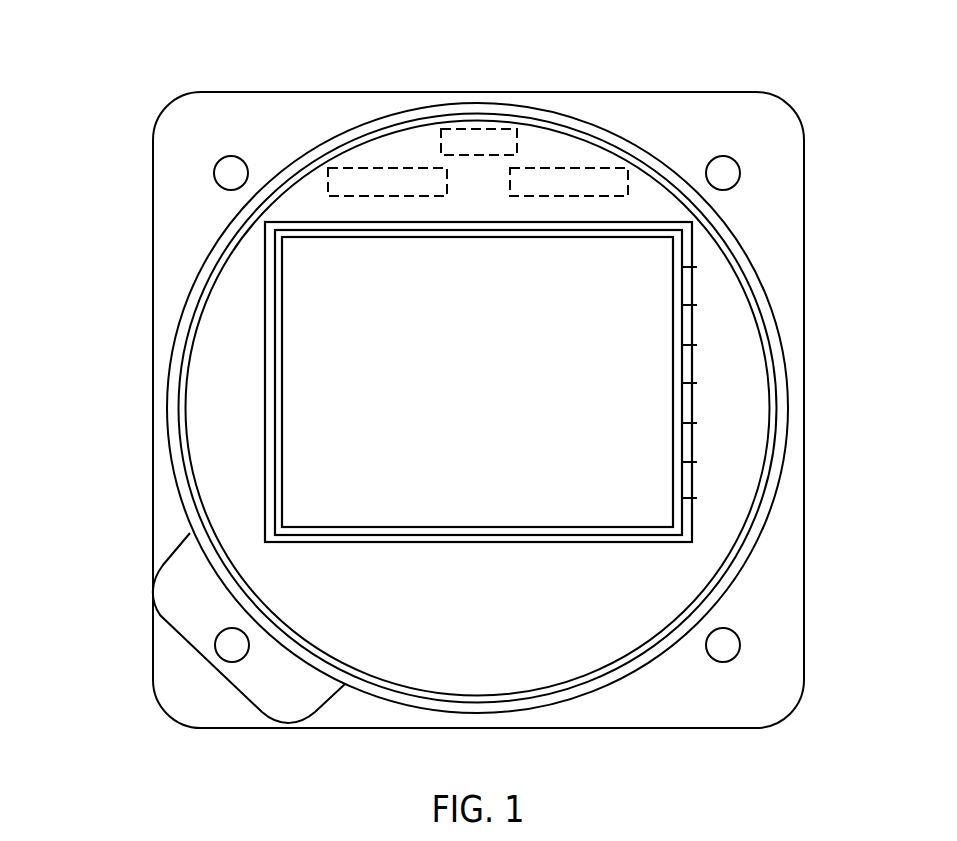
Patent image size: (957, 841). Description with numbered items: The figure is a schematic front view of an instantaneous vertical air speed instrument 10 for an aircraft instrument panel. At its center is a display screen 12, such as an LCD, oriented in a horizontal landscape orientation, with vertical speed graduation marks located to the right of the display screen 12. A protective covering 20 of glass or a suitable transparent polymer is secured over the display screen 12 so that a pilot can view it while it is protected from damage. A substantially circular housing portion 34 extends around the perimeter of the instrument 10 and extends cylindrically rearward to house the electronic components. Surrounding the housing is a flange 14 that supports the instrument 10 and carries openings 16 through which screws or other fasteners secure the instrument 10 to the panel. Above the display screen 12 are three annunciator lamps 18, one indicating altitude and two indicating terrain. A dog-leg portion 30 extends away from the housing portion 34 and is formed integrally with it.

The instantaneous vertical air speed instrument device 10 is at (702, 65).
The display screen 12 is at (648, 318).
The flange 14 is at (796, 563).
The openings 16 is at (231, 156).
The annunciator lamps 18 is at (380, 178).
The protective covering 20 is at (755, 457).
The dog-leg portion 30 is at (183, 600).
The housing portion 34 is at (722, 230).